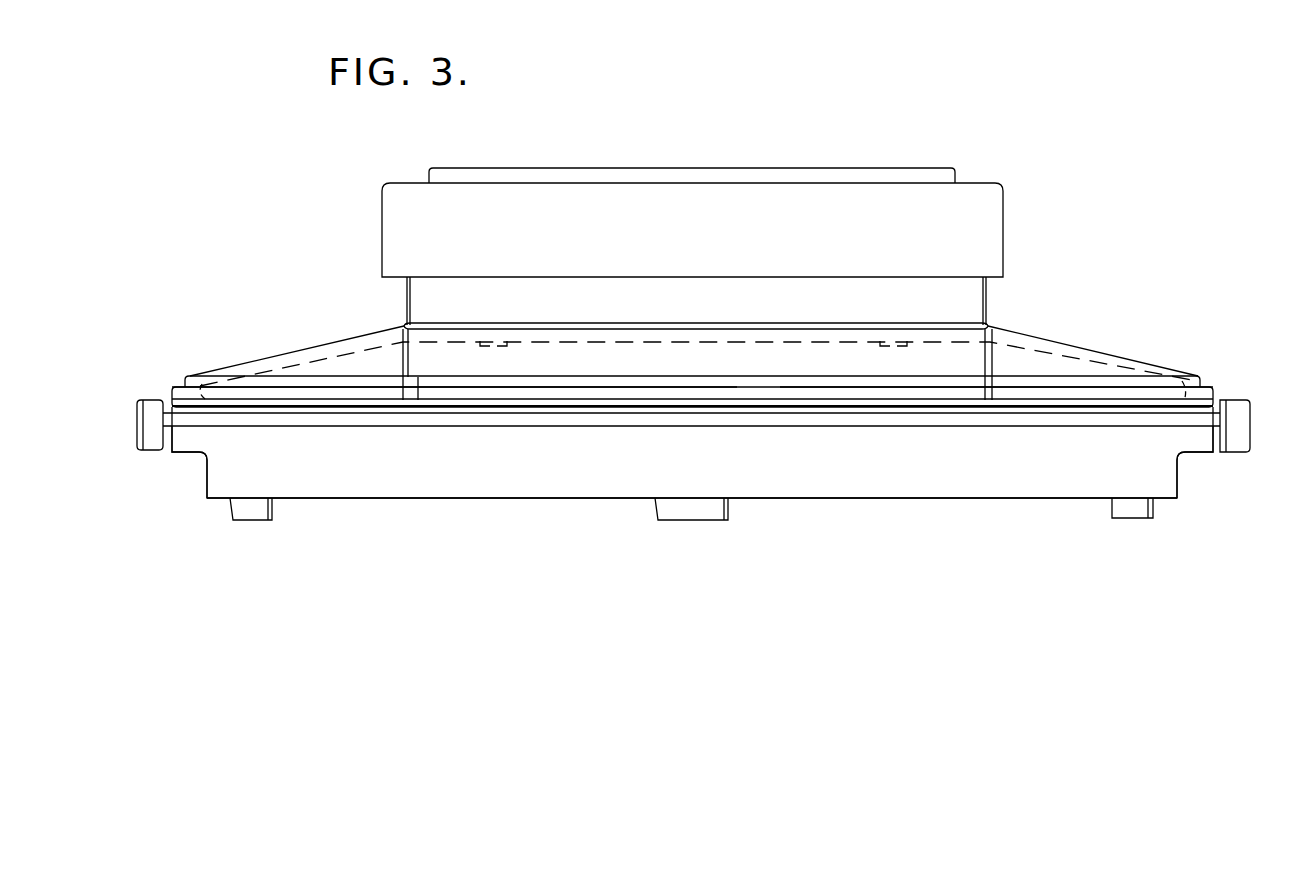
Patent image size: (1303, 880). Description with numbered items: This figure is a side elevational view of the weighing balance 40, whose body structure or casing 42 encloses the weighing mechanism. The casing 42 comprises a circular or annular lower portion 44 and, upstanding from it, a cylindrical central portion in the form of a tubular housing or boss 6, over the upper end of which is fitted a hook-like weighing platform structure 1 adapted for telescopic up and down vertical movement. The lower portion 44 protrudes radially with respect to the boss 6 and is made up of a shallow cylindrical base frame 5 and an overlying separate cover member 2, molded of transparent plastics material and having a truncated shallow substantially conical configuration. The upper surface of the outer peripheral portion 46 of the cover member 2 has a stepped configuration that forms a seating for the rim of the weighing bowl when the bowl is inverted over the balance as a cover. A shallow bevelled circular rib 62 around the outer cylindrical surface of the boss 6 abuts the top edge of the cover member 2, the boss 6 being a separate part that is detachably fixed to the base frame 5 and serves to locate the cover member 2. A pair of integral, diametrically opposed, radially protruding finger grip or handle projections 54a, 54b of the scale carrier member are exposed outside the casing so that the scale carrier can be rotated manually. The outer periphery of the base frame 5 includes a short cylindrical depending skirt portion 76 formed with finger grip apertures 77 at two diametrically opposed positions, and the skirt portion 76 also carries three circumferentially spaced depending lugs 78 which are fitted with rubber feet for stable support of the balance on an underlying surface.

The weighing platform structure 1 is at (800, 173).
The cover member 2 is at (1077, 345).
The base frame 5 is at (1028, 463).
The tubular housing or boss 6 is at (903, 298).
The weighing balance 40 is at (1022, 305).
The body structure or casing 42 is at (400, 311).
The lower portion 44 is at (172, 377).
The outer peripheral portion 46 is at (1185, 373).
The finger grip or handle projection 54a is at (150, 432).
The finger grip or handle projection 54b is at (1234, 430).
The bevelled circular rib 62 is at (567, 323).
The skirt portion 76 is at (829, 472).
The finger grip apertures 77 is at (195, 462).
The depending lugs 78 is at (258, 512).